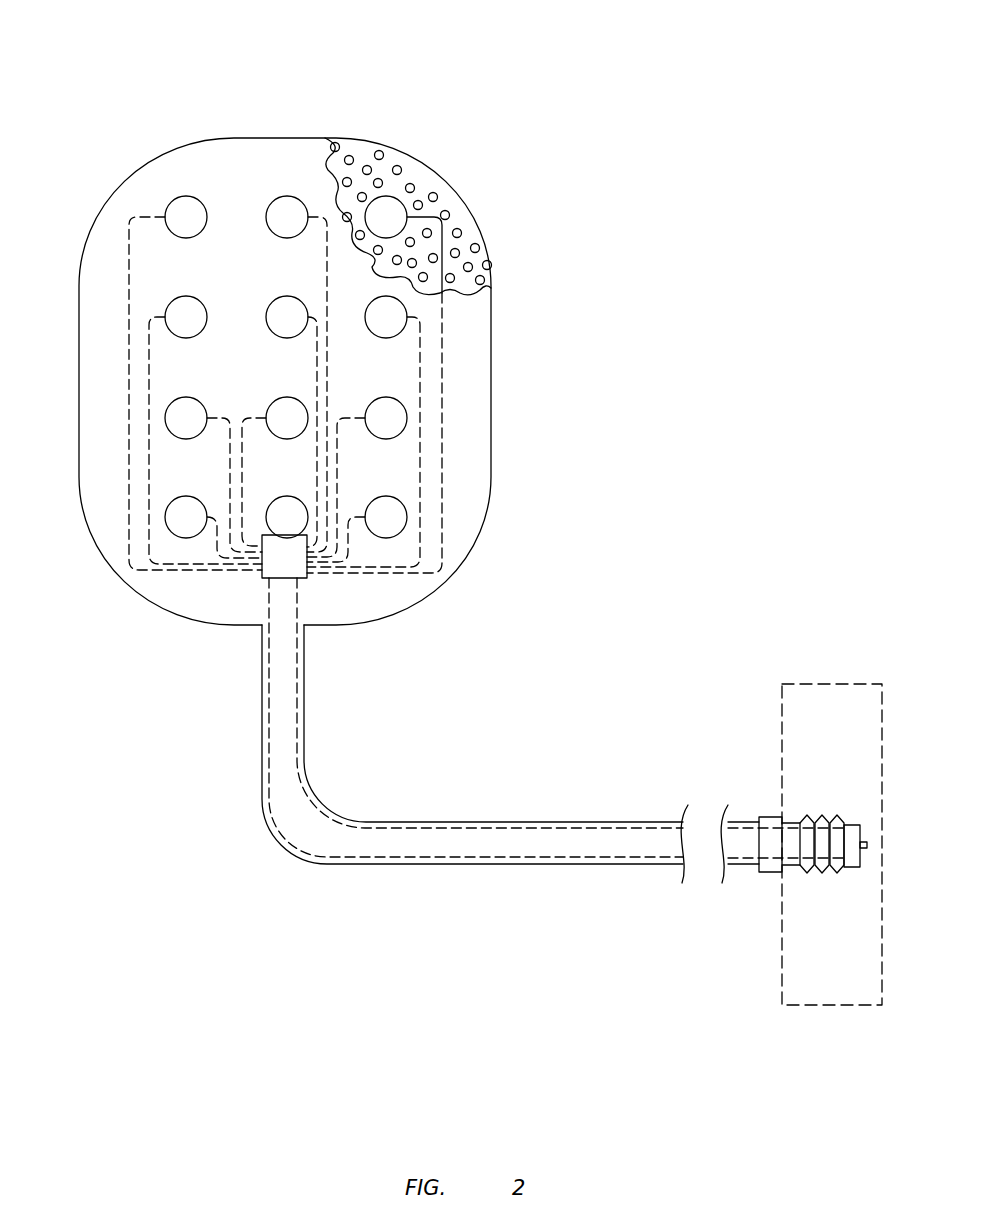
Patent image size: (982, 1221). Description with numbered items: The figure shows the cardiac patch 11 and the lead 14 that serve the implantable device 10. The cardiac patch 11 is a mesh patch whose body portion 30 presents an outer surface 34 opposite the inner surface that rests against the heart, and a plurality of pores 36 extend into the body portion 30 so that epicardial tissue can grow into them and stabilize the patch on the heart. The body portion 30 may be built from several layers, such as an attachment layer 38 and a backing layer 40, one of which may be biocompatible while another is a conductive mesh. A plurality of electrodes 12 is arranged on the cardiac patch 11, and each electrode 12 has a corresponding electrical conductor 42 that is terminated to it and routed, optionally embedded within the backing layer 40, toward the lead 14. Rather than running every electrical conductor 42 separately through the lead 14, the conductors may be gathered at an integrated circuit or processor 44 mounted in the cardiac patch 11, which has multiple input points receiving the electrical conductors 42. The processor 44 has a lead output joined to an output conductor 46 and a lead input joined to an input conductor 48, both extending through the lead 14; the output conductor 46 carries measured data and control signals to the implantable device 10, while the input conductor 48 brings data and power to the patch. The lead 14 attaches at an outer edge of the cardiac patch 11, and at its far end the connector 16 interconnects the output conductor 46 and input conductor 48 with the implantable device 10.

The implantable device 10 is at (833, 684).
The cardiac patch 11 is at (369, 367).
The electrode 12 is at (405, 509).
The lead 14 is at (513, 730).
The connector 16 is at (762, 873).
The body portion 30 is at (398, 459).
The outer surface 34 is at (256, 374).
The pores 36 is at (413, 183).
The attachment layer 38 is at (330, 170).
The backing layer 40 is at (245, 160).
The electrical conductor 42 is at (170, 570).
The processor 44 is at (269, 569).
The output conductor 46 is at (268, 760).
The input conductor 48 is at (303, 738).